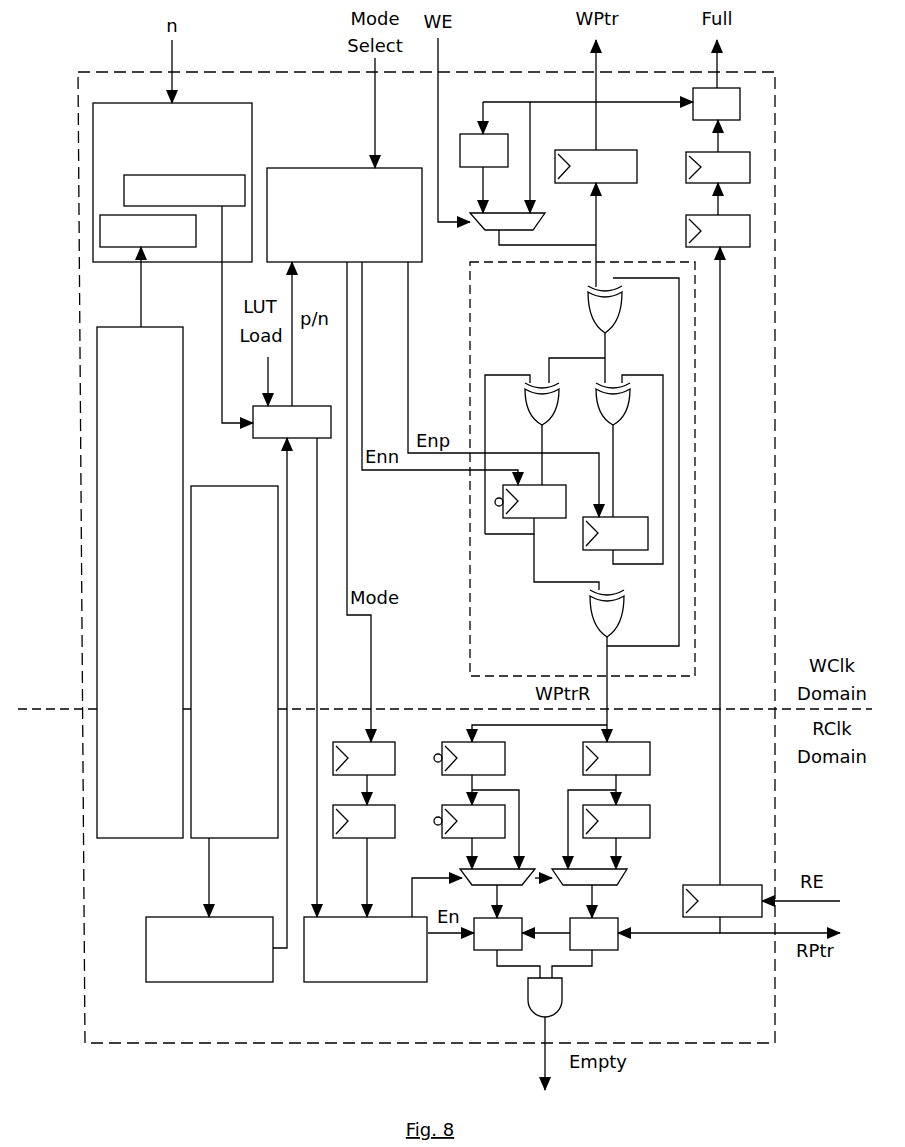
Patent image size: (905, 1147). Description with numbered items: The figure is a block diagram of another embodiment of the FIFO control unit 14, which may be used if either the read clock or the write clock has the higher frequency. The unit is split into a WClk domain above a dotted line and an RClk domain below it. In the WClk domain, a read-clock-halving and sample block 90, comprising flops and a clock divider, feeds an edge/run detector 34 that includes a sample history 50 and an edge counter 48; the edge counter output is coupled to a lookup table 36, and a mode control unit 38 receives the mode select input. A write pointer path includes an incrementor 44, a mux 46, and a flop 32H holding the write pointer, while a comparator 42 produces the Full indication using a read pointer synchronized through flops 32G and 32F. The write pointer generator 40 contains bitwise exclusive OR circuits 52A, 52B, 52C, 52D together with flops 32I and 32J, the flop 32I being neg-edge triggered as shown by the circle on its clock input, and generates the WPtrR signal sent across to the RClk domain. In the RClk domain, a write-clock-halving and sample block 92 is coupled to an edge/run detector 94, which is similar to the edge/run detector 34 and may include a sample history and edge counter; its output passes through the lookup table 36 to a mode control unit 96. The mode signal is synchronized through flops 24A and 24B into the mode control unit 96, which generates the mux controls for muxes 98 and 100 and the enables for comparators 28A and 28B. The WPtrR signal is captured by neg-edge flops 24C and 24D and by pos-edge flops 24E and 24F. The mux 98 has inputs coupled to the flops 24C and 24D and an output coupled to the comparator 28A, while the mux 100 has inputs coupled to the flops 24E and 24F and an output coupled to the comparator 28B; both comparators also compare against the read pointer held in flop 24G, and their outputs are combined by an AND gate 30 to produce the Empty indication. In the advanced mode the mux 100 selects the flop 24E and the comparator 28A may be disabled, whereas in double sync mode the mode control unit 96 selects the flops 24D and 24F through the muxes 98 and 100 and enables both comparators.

The FIFO control unit 14 is at (426, 557).
The edge/run detector 34 is at (142, 182).
The edge counter 48 is at (124, 190).
The sample history 50 is at (100, 230).
The mode control unit 38 is at (344, 215).
The lookup table 36 is at (330, 407).
The RClk/2 and sample block 90 is at (140, 582).
The WClk/2 and sample block 92 is at (234, 662).
The edge/run detector 94 is at (209, 949).
The mode control unit 96 is at (365, 949).
The incrementor 44 is at (460, 134).
The mux 46 is at (476, 223).
The comparator 42 is at (700, 88).
The flop 32H is at (614, 150).
The flop 32F is at (718, 167).
The flop 32G is at (718, 231).
The write pointer generator 40 is at (558, 460).
The bitwise exclusive OR circuit 52A is at (603, 313).
The bitwise exclusive OR circuit 52B is at (547, 400).
The bitwise exclusive OR circuit 52C is at (611, 398).
The bitwise exclusive OR circuit 52D is at (608, 618).
The flop 32I is at (530, 501).
The flop 32J is at (615, 533).
The flop 24A is at (364, 758).
The flop 24B is at (364, 821).
The flop 24C is at (469, 758).
The flop 24D is at (469, 821).
The flop 24E is at (616, 758).
The flop 24F is at (616, 821).
The flop 24G is at (747, 885).
The mux 98 is at (462, 870).
The mux 100 is at (628, 870).
The comparator 28A is at (497, 952).
The comparator 28B is at (597, 952).
The AND gate 30 is at (553, 997).